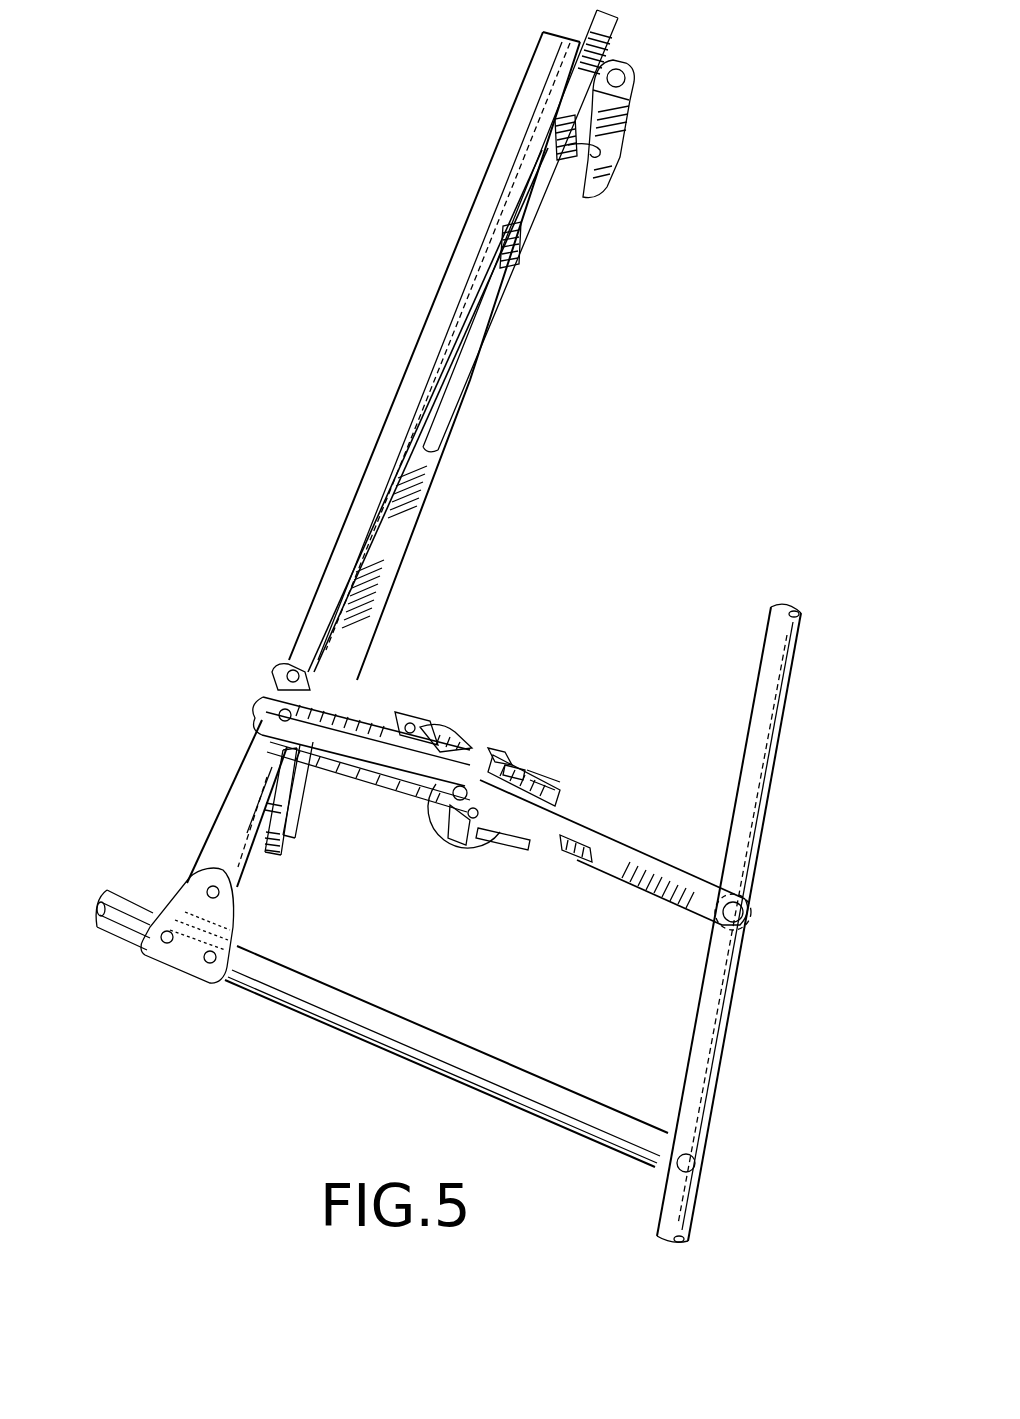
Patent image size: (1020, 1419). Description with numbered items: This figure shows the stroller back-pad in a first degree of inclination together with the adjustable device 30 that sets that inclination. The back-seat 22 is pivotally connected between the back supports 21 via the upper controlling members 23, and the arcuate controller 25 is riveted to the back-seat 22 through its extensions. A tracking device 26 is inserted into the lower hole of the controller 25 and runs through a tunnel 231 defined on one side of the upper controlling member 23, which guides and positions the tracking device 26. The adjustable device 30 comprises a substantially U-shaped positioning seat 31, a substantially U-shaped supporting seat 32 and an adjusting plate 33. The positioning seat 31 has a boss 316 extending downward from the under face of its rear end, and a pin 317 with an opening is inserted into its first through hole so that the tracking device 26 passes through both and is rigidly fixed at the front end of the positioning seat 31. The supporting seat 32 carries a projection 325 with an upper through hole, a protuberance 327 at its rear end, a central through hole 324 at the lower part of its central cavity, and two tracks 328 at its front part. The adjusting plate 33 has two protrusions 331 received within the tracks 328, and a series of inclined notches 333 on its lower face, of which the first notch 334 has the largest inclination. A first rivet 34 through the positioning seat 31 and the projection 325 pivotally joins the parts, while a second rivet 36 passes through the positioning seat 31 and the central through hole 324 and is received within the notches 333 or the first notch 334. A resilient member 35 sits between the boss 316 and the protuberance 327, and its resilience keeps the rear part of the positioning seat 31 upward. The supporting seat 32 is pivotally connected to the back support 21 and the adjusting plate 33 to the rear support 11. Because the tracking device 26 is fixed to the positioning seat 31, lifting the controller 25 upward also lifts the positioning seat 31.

The rear support 11 is at (764, 765).
The back support 21 is at (240, 802).
The back-seat 22 is at (452, 409).
The upper controlling member 23 is at (531, 217).
The tunnel 231 is at (550, 192).
The arcuate controller 25 is at (630, 104).
The tracking device 26 is at (515, 270).
The adjustable device 30 is at (556, 658).
The positioning seat 31 is at (384, 705).
The pin 317 is at (286, 676).
The track 328 is at (300, 725).
The first rivet 34 is at (412, 722).
The projection 325 is at (435, 718).
The boss 316 is at (500, 758).
The resilient member 35 is at (516, 770).
The protuberance 327 is at (547, 776).
The supporting seat 32 is at (550, 801).
The second rivet 36 is at (477, 832).
The protrusion 331 is at (452, 798).
The central through hole 324 is at (468, 818).
The first notch 334 is at (465, 840).
The inclined notches 333 is at (555, 852).
The adjusting plate 33 is at (666, 870).